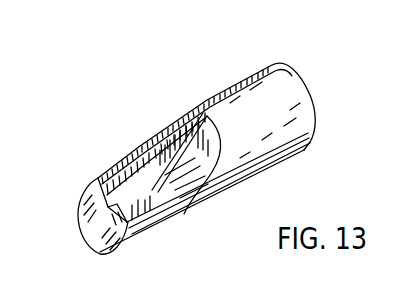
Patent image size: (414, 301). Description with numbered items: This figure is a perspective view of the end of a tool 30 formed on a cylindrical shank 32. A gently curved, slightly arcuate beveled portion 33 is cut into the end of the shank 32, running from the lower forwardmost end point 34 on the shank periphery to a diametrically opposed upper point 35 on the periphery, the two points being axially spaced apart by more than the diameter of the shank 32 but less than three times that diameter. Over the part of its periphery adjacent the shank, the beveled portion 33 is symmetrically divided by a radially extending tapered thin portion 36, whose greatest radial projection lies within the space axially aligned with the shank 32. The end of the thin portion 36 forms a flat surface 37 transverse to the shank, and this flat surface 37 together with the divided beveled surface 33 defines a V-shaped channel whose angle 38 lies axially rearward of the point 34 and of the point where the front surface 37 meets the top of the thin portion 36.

The tool 30 is at (216, 69).
The shank 32 is at (277, 147).
The beveled portion 33 is at (188, 179).
The lower forwardmost end point 34 is at (80, 250).
The upper point 35 is at (220, 112).
The tapered thin portion 36 is at (113, 168).
The flat surface 37 is at (83, 198).
The angle 38 is at (118, 232).